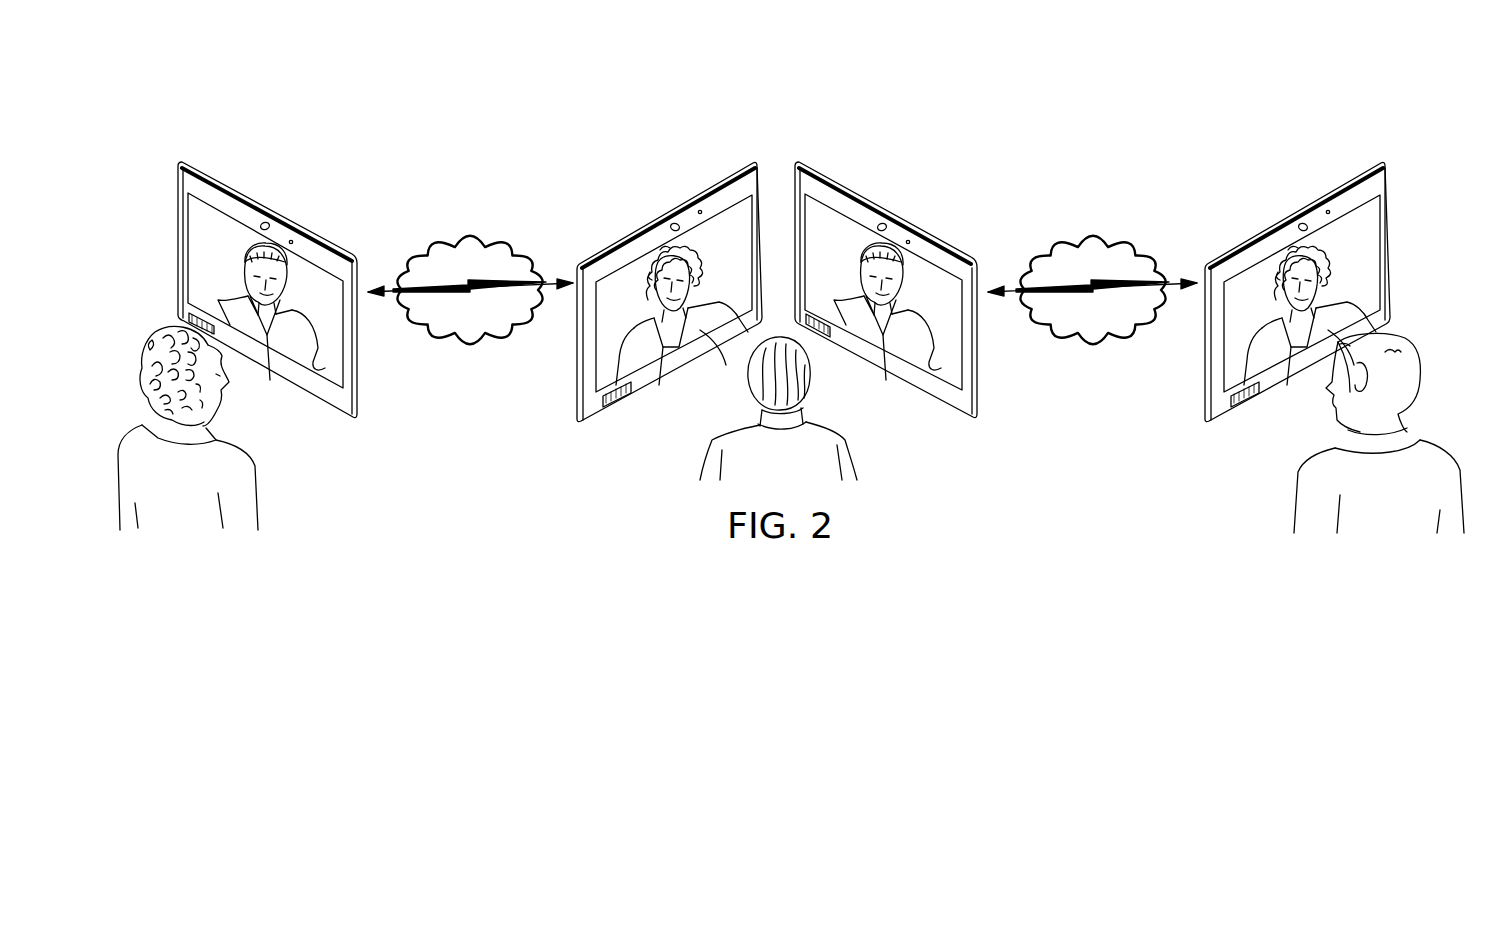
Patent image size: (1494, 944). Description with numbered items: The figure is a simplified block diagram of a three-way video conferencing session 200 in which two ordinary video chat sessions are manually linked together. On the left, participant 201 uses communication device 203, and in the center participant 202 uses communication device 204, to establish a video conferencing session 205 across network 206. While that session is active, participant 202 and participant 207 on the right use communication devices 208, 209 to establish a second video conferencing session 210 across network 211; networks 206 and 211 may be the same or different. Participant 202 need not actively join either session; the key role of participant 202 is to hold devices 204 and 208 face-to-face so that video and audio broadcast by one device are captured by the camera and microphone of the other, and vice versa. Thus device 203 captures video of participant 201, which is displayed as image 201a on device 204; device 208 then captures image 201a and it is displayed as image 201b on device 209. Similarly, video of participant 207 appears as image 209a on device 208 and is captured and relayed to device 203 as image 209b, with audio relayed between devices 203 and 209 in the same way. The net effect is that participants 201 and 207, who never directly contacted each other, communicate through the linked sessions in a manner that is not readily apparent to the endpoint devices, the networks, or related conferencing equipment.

The three-way video conferencing session 200 is at (488, 114).
The participant 201 is at (140, 432).
The image 201a is at (655, 365).
The image 201b is at (1272, 355).
The participant 202 is at (736, 440).
The communication device 203 is at (272, 208).
The communication device 204 is at (668, 208).
The video conferencing session 205 is at (452, 292).
The network 206 is at (467, 237).
The participant 207 is at (1432, 445).
The communication device 208 is at (888, 210).
The communication device 209 is at (1295, 208).
The image 209a is at (913, 360).
The image 209b is at (288, 363).
The video conferencing session 210 is at (1137, 290).
The network 211 is at (1093, 237).